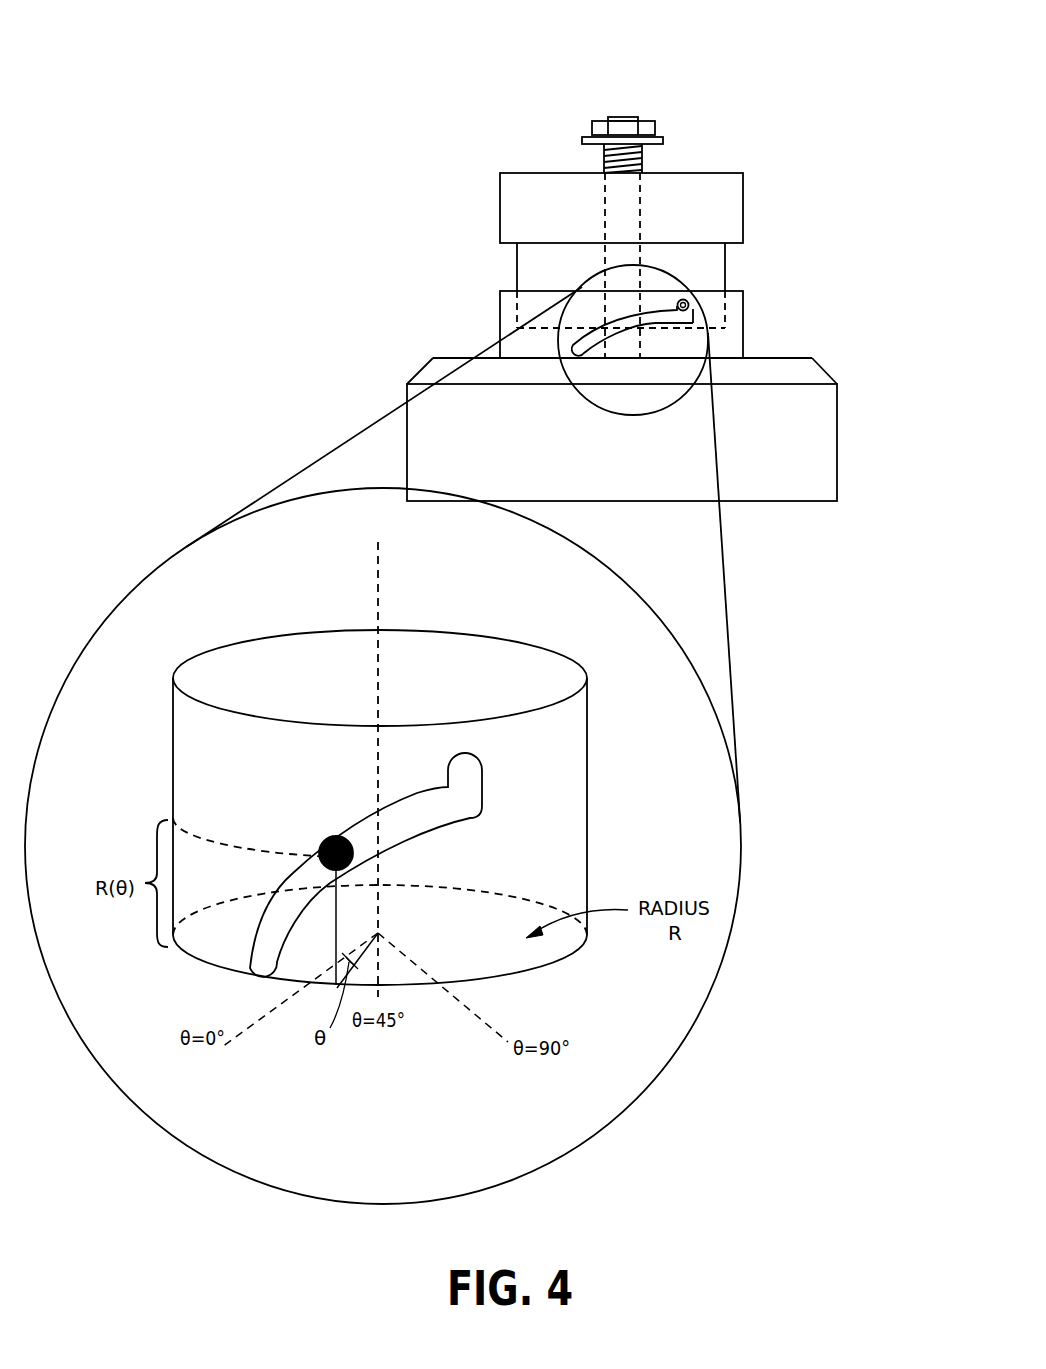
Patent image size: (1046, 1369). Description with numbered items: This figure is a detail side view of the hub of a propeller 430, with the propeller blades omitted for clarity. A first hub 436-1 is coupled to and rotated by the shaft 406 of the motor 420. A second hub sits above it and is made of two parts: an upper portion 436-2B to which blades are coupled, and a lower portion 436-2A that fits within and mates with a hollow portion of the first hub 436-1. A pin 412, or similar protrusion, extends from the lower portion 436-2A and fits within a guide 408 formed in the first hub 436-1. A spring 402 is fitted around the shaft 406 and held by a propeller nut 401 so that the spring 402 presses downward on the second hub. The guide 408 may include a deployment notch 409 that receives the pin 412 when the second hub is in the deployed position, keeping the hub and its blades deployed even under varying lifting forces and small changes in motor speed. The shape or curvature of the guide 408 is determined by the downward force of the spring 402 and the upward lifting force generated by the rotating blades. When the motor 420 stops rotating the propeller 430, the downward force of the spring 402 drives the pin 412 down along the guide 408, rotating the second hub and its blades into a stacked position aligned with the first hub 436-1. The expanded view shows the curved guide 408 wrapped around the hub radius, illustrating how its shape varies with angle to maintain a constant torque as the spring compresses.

The propeller 430 is at (605, 84).
The propeller nut 401 is at (643, 120).
The spring 402 is at (643, 160).
The shaft 406 is at (620, 260).
The upper portion of the second hub 436-2B is at (743, 200).
The lower portion of the second hub 436-2A is at (727, 263).
The first hub 436-1 is at (745, 343).
The guide 408 is at (573, 345).
The pin 412 is at (693, 305).
The deployment notch 409 is at (693, 320).
The motor 420 is at (822, 453).